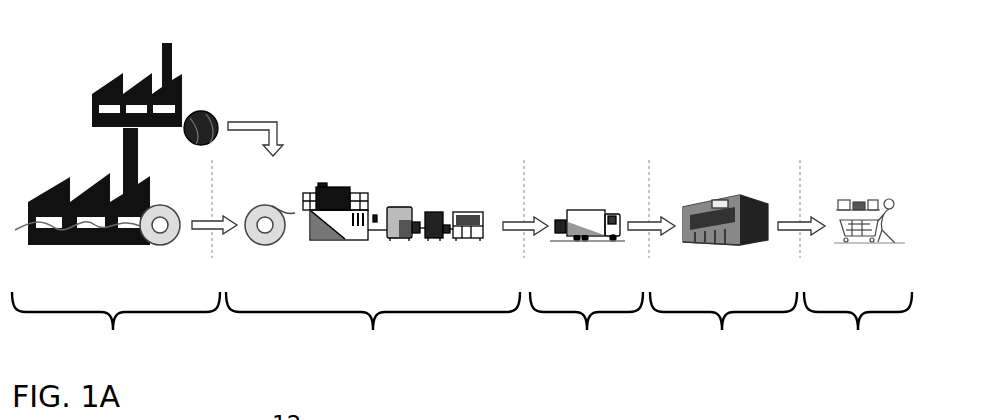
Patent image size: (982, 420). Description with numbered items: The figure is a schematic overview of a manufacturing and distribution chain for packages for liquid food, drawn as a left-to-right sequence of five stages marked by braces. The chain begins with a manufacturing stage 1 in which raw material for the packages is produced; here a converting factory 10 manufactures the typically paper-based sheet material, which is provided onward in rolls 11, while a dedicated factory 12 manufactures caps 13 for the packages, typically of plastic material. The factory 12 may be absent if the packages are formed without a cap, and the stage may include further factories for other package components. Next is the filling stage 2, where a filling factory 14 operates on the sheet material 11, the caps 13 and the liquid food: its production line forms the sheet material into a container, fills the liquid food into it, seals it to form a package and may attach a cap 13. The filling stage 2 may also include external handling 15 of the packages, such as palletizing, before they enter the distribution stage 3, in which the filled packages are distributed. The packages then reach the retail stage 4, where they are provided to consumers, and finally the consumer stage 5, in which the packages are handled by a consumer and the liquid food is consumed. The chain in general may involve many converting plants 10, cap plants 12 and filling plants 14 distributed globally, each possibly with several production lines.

The manufacturing stage 1 is at (116, 326).
The filling stage 2 is at (373, 326).
The distribution stage 3 is at (586, 326).
The retail stage 4 is at (723, 326).
The consumer stage 5 is at (858, 326).
The converting factory 10 is at (62, 180).
The rolls 11 is at (268, 245).
The dedicated factory 12 is at (103, 82).
The caps 13 is at (205, 118).
The filling factory 14 is at (399, 182).
The external handling 15 is at (518, 178).